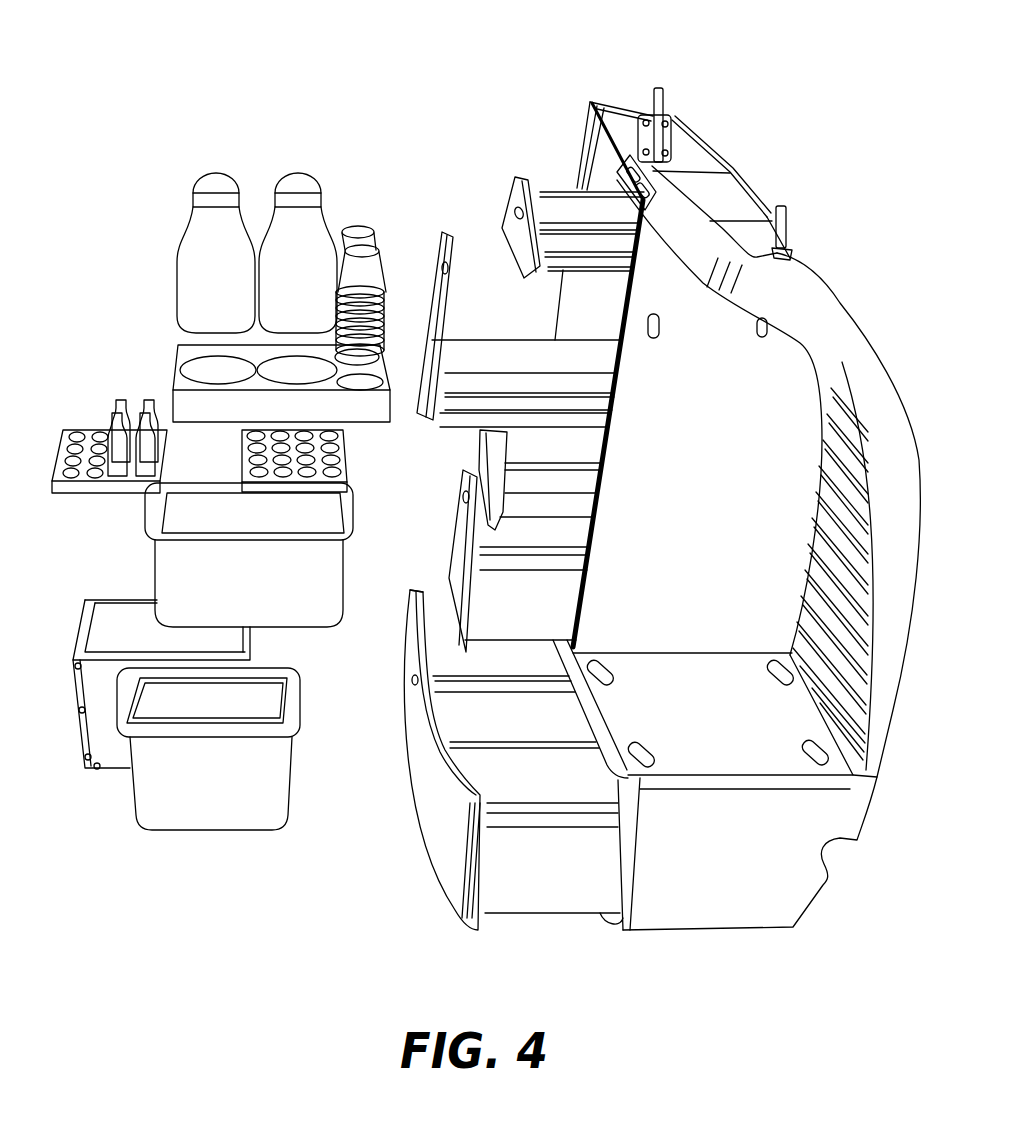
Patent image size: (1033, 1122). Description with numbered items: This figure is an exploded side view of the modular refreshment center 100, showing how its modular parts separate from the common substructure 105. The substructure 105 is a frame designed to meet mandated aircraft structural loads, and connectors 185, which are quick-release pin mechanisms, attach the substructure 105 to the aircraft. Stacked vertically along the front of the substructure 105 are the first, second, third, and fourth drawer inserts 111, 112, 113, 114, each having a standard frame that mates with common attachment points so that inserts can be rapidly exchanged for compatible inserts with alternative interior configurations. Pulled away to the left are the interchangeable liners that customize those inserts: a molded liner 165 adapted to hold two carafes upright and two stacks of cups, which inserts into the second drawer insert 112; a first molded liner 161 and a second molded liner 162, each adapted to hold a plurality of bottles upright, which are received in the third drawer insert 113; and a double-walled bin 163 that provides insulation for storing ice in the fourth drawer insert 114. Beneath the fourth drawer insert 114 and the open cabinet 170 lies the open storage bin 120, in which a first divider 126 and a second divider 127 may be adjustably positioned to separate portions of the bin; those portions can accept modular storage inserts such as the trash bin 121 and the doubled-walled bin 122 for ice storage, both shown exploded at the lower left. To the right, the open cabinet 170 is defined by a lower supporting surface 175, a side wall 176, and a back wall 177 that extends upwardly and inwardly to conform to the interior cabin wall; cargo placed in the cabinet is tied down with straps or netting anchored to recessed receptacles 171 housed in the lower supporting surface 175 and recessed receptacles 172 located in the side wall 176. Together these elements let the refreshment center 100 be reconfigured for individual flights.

The modular refreshment center 100 is at (296, 42).
The substructure 105 is at (838, 318).
The first drawer insert 111 is at (512, 210).
The second drawer insert 112 is at (446, 238).
The third drawer insert 113 is at (483, 460).
The fourth drawer insert 114 is at (467, 508).
The open storage bin 120 is at (440, 857).
The trash bin 121 is at (94, 694).
The doubled-walled bin 122 is at (146, 816).
The first divider 126 is at (521, 727).
The second divider 127 is at (551, 787).
The first molded liner 161 is at (83, 430).
The second molded liner 162 is at (253, 466).
The double-walled bin 163 is at (177, 571).
The molded liner 165 is at (183, 348).
The open cabinet 170 is at (860, 723).
The recessed receptacles 171 is at (610, 672).
The recessed receptacles 172 is at (762, 337).
The lower supporting surface 175 is at (738, 762).
The side wall 176 is at (758, 559).
The back wall 177 is at (860, 612).
The connectors 185 is at (665, 99).